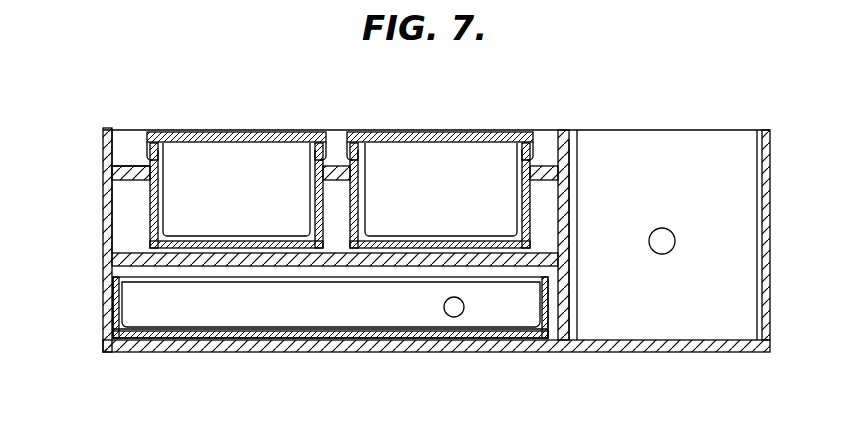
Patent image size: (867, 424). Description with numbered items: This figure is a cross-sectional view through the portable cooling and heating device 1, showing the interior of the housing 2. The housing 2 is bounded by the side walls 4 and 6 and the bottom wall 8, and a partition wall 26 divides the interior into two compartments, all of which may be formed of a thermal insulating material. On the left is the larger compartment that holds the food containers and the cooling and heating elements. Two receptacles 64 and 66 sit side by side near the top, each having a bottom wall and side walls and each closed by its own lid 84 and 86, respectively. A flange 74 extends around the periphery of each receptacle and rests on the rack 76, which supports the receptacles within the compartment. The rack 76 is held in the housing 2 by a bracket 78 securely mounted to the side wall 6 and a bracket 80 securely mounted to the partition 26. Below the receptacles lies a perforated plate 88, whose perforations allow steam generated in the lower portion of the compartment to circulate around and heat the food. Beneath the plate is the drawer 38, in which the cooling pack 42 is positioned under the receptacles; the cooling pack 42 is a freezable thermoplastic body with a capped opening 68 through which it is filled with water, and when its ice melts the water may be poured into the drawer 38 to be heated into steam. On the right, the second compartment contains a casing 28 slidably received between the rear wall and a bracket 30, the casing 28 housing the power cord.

The portable cooling and heating device 1 is at (169, 94).
The housing 2 is at (104, 203).
The side wall 4 is at (771, 234).
The side wall 6 is at (108, 257).
The bottom wall 8 is at (524, 353).
The partition wall 26 is at (558, 133).
The casing 28 is at (662, 139).
The bracket 30 is at (576, 132).
The drawer 38 is at (114, 333).
The cooling pack 42 is at (128, 303).
The receptacle 64 is at (222, 199).
The receptacle 66 is at (429, 199).
The capped opening 68 is at (452, 313).
The flange 74 is at (150, 160).
The rack 76 is at (118, 136).
The bracket 78 is at (122, 178).
The bracket 80 is at (570, 197).
The lid 84 is at (245, 133).
The lid 86 is at (428, 134).
The perforated plate 88 is at (146, 256).